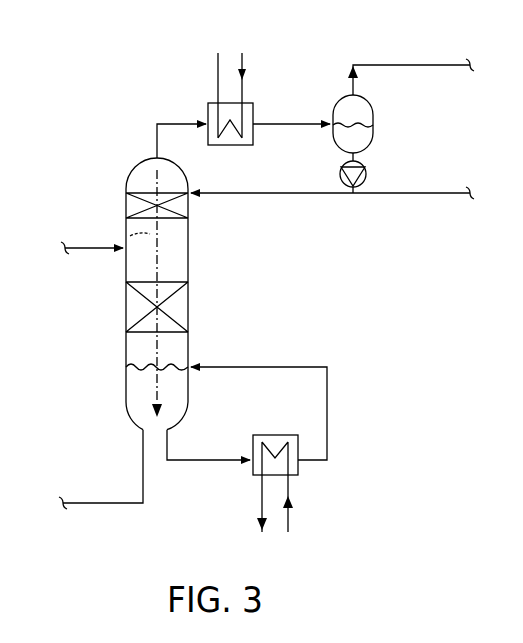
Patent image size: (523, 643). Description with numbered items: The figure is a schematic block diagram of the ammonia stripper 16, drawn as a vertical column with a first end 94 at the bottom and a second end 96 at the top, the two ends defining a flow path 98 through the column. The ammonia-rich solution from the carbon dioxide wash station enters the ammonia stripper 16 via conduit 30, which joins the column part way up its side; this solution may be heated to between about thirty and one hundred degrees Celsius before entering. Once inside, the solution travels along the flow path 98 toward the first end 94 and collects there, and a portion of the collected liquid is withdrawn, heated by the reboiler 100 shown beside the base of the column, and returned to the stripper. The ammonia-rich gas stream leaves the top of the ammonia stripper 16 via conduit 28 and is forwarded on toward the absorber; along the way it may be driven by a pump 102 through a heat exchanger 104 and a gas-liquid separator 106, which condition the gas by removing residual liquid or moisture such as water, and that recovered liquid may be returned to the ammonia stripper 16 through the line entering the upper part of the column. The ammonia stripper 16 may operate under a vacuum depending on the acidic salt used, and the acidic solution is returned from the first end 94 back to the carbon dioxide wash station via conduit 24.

The ammonia stripper 16 is at (107, 269).
The conduit 24 is at (80, 502).
The conduit 28 is at (172, 121).
The conduit 30 is at (80, 252).
The first end 94 is at (116, 415).
The second end 96 is at (137, 157).
The flow path 98 is at (130, 236).
The reboiler 100 is at (298, 468).
The pump 102 is at (366, 172).
The heat exchanger 104 is at (253, 108).
The gas-liquid separator 106 is at (373, 100).